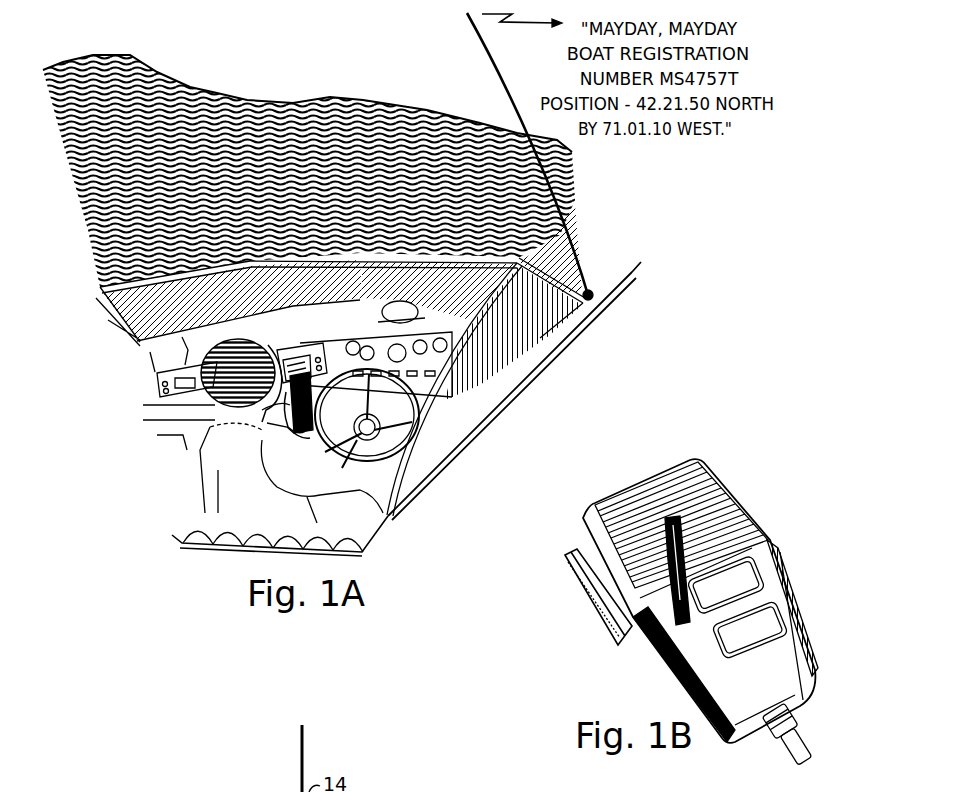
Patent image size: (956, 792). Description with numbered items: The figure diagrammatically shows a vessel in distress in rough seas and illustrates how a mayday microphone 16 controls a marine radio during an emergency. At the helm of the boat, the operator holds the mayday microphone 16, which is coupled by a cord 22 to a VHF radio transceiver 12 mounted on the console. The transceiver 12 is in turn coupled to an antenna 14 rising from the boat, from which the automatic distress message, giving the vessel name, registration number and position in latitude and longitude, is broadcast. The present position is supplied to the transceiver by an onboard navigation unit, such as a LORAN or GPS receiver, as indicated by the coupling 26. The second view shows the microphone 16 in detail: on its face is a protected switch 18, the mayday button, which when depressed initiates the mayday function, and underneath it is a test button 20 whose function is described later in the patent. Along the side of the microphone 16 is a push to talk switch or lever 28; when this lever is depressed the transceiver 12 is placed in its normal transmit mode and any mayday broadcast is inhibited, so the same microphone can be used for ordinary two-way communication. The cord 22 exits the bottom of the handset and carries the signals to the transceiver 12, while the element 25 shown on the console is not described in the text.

In FIG. 1A, the VHF radio transceiver 12 is at (158, 388).
In FIG. 1A, the antenna 14 is at (589, 290).
In FIG. 1A, the mayday microphone 16 is at (282, 425).
In FIG. 1B, the mayday microphone 16 is at (753, 521).
In FIG. 1B, the protected switch 18 is at (763, 572).
In FIG. 1B, the test button 20 is at (783, 619).
In FIG. 1B, the cord 22 is at (790, 761).
In FIG. 1A, the display unit 25 is at (327, 335).
In FIG. 1A, the arrow indicating navigation unit coupling 26 is at (158, 354).
In FIG. 1B, the push to talk switch or lever 28 is at (592, 615).